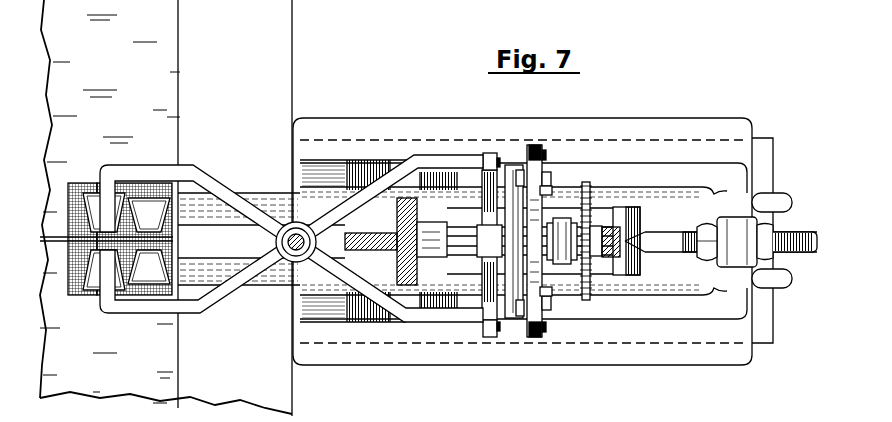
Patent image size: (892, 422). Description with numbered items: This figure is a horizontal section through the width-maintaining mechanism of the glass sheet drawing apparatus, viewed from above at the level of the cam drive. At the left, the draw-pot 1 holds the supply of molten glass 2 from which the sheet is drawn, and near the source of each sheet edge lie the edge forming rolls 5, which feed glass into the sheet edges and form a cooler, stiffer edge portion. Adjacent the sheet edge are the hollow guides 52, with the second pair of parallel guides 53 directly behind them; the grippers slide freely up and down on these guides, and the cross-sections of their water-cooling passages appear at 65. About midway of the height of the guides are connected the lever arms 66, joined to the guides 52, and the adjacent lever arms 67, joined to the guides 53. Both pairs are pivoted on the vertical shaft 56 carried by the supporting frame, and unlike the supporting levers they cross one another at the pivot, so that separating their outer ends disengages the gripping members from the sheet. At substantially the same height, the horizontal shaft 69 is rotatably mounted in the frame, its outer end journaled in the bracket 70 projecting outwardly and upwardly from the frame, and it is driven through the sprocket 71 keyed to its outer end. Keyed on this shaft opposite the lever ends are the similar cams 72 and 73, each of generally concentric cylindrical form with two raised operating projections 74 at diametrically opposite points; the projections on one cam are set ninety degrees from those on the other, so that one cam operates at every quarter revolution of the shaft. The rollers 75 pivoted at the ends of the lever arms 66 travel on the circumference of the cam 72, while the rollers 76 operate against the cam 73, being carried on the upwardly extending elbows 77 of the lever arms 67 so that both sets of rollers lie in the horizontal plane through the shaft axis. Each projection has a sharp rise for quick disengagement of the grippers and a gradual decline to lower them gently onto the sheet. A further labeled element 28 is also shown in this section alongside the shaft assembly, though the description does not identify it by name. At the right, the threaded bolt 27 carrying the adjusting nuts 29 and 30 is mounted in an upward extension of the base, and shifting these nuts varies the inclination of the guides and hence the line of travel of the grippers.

The draw-pot 1 is at (284, 78).
The molten glass 2 is at (166, 207).
The edge forming rolls 5 is at (72, 182).
The threaded bolt 27 is at (792, 233).
The tube 28 is at (602, 218).
The adjusting nut 29 is at (717, 220).
The adjusting nut 30 is at (767, 232).
The guides 52 is at (133, 187).
The guides 53 is at (92, 187).
The vertical shaft 56 is at (278, 262).
The cooling system cross-sections 65 is at (148, 200).
The lever arms 66 is at (227, 203).
The lever arms 67 is at (192, 180).
The horizontal shaft 69 is at (513, 325).
The bracket 70 is at (585, 298).
The sprocket 71 is at (594, 296).
The cam 72 is at (533, 153).
The cam 73 is at (545, 190).
The raised operating projections 74 is at (552, 184).
The rollers 75 is at (489, 160).
The rollers 76 is at (548, 180).
The upwardly extending elbows 77 is at (522, 184).